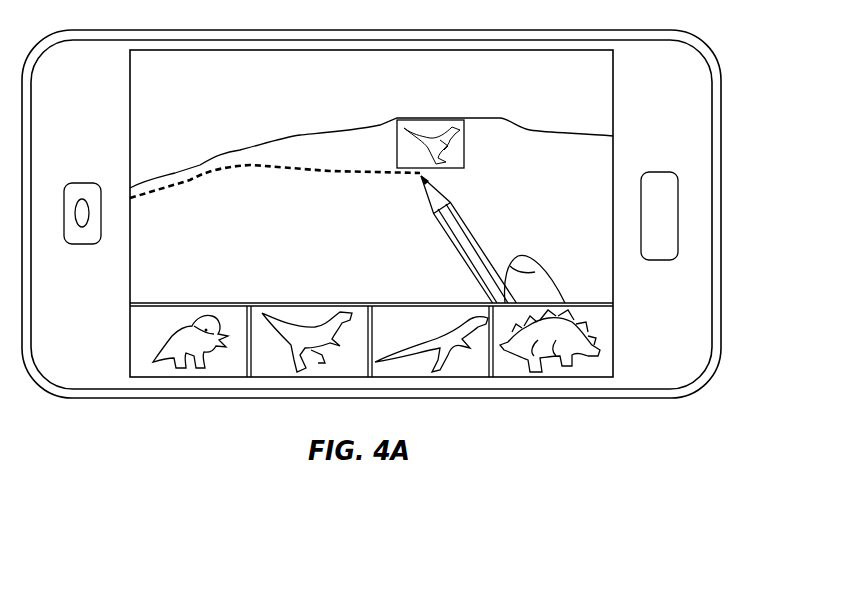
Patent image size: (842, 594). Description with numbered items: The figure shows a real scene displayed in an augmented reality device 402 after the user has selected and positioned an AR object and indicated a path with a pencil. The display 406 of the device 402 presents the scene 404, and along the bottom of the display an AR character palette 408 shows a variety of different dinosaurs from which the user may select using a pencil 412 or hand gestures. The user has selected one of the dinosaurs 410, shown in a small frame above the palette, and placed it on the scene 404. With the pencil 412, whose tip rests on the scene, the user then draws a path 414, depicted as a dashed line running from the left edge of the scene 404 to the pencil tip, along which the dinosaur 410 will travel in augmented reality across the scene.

The device 402 is at (721, 286).
The scene 404 is at (172, 77).
The display 406 is at (613, 77).
The AR character palette 408 is at (625, 345).
The dinosaur 410 is at (464, 143).
The pencil 412 is at (470, 265).
The path 414 is at (277, 168).